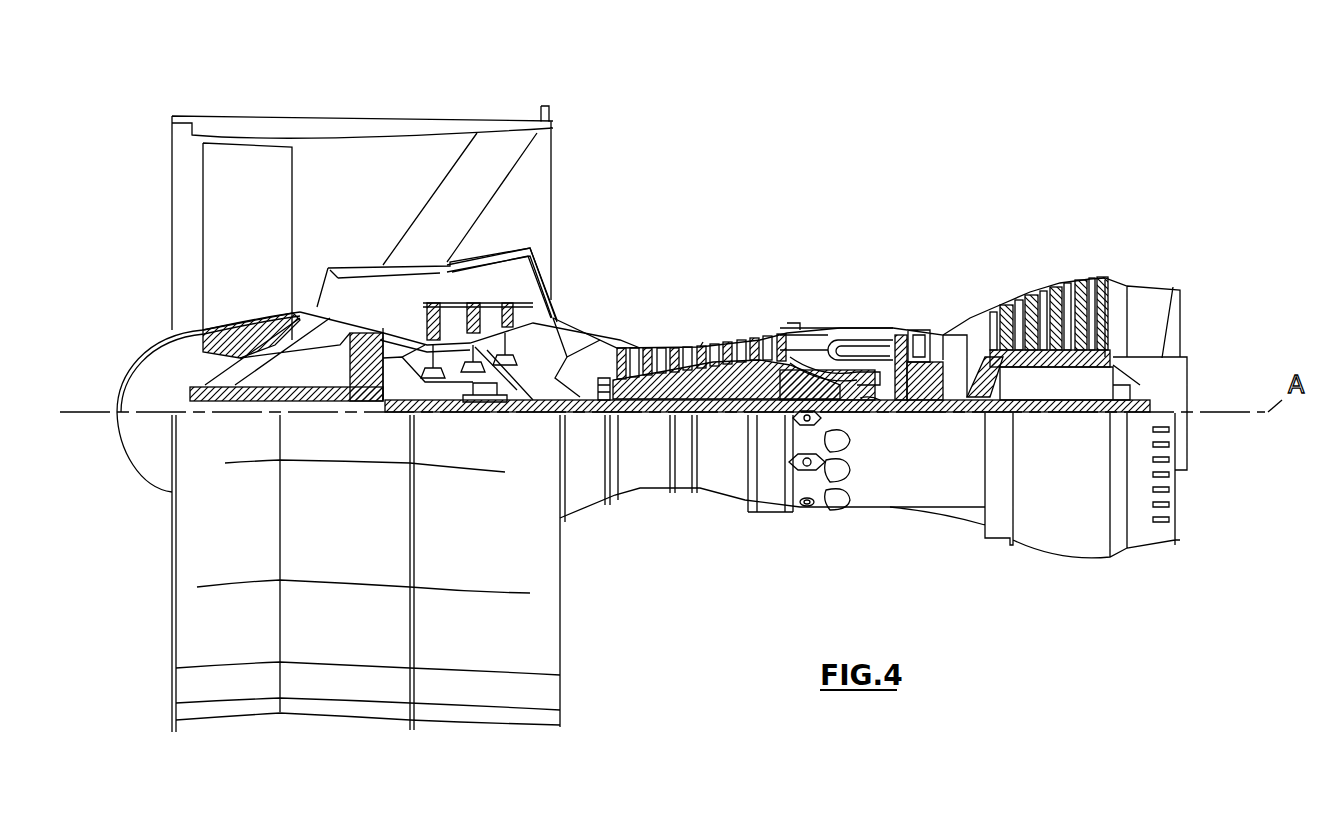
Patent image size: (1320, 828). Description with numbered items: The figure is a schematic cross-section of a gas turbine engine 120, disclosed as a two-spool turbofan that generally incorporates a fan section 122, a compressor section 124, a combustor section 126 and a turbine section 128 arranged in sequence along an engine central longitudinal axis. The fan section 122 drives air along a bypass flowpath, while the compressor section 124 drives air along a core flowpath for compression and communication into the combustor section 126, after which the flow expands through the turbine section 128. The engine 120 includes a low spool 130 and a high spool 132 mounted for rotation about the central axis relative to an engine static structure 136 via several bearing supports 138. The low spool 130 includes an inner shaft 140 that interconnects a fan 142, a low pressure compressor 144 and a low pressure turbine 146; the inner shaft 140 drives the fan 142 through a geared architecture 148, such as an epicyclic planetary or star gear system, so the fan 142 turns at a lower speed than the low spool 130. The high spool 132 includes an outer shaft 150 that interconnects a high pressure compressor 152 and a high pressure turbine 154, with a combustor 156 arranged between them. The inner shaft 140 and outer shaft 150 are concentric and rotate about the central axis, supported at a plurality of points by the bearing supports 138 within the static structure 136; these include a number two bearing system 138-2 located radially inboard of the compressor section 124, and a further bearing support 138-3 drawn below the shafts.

The gas turbine engine 120 is at (870, 156).
The fan section 122 is at (287, 112).
The compressor section 124 is at (612, 318).
The combustor section 126 is at (857, 272).
The turbine section 128 is at (998, 248).
The low spool 130 is at (913, 420).
The high spool 132 is at (720, 380).
The engine static structure 136 is at (769, 514).
The bearing supports 138 is at (950, 405).
The #2 bearing system 138-2 is at (490, 404).
The bearing 138-3 is at (620, 493).
The inner shaft 140 is at (578, 414).
The fan 142 is at (276, 251).
The low pressure compressor 144 is at (532, 263).
The low pressure turbine 146 is at (1052, 288).
The geared architecture 148 is at (366, 405).
The outer shaft 150 is at (860, 398).
The high pressure compressor 152 is at (700, 340).
The high pressure turbine 154 is at (925, 326).
The combustor 156 is at (853, 345).